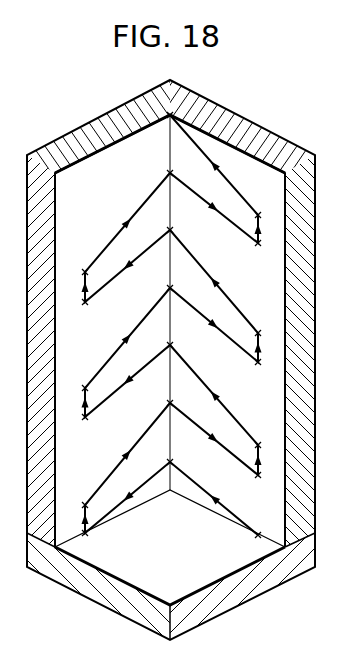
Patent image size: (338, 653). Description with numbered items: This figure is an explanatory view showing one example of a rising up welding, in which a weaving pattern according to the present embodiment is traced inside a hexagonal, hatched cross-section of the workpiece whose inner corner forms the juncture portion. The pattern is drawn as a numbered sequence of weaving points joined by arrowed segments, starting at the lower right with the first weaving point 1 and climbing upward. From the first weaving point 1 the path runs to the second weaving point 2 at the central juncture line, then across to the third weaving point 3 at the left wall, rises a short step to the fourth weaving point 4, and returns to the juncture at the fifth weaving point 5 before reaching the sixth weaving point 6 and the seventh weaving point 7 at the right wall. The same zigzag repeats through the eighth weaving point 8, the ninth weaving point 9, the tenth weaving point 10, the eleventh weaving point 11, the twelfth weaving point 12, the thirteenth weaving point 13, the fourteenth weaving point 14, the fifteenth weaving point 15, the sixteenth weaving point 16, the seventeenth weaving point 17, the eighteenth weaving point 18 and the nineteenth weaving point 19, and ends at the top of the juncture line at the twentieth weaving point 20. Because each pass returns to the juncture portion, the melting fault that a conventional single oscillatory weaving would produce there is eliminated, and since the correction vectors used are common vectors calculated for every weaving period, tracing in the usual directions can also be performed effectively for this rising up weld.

The first reflection point 1 is at (262, 523).
The second reflection point 2 is at (178, 455).
The third reflection point 3 is at (77, 527).
The fourth reflection point 4 is at (77, 503).
The fifth reflection point 5 is at (178, 396).
The sixth reflection point 6 is at (265, 477).
The seventh reflection point 7 is at (265, 445).
The eighth reflection point 8 is at (178, 340).
The ninth reflection point 9 is at (77, 417).
The tenth reflection point 10 is at (73, 382).
The eleventh reflection point 11 is at (178, 278).
The twelfth reflection point 12 is at (268, 363).
The thirteenth reflection point 13 is at (268, 328).
The fourteenth reflection point 14 is at (181, 222).
The fifteenth reflection point 15 is at (73, 303).
The sixteenth reflection point 16 is at (72, 262).
The seventeenth reflection point 17 is at (181, 165).
The eighteenth reflection point 18 is at (268, 250).
The nineteenth reflection point 19 is at (268, 203).
The twentieth reflection point (exit) 20 is at (158, 132).